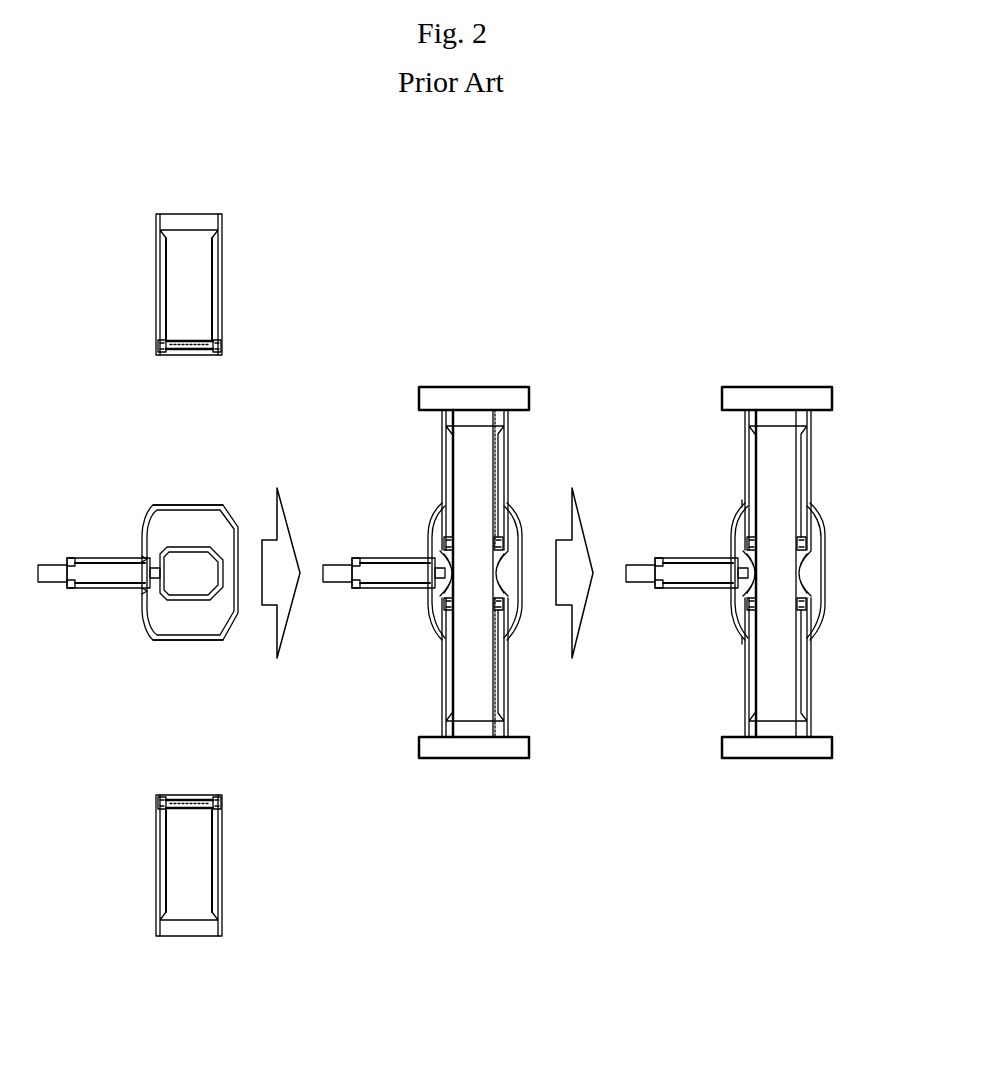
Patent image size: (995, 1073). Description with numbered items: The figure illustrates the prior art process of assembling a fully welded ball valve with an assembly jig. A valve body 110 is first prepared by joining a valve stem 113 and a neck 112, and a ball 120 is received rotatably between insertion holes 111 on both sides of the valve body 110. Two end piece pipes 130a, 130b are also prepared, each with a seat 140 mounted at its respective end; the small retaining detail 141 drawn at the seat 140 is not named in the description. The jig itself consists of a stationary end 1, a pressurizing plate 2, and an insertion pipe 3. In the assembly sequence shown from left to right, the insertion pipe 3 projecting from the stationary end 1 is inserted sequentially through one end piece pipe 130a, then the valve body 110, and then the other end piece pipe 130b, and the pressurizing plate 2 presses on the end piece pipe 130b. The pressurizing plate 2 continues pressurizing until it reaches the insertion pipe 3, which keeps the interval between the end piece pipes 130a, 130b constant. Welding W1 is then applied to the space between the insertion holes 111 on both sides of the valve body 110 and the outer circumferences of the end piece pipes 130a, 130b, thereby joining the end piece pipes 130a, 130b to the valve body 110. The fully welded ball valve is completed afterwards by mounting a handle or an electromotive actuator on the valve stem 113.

The stationary end 1 is at (531, 749).
The pressurizing plate 2 is at (531, 400).
The insertion pipe 3 is at (479, 452).
The valve body 110 is at (145, 517).
The insertion holes 111 is at (153, 505).
The neck 112 is at (92, 570).
The valve stem 113 is at (72, 558).
The ball 120 is at (157, 597).
The end piece pipe 130a is at (156, 884).
The end piece pipe 130b is at (157, 256).
The seat 140 is at (167, 350).
The clamp ring 141 is at (166, 341).
The welding W1 is at (742, 503).